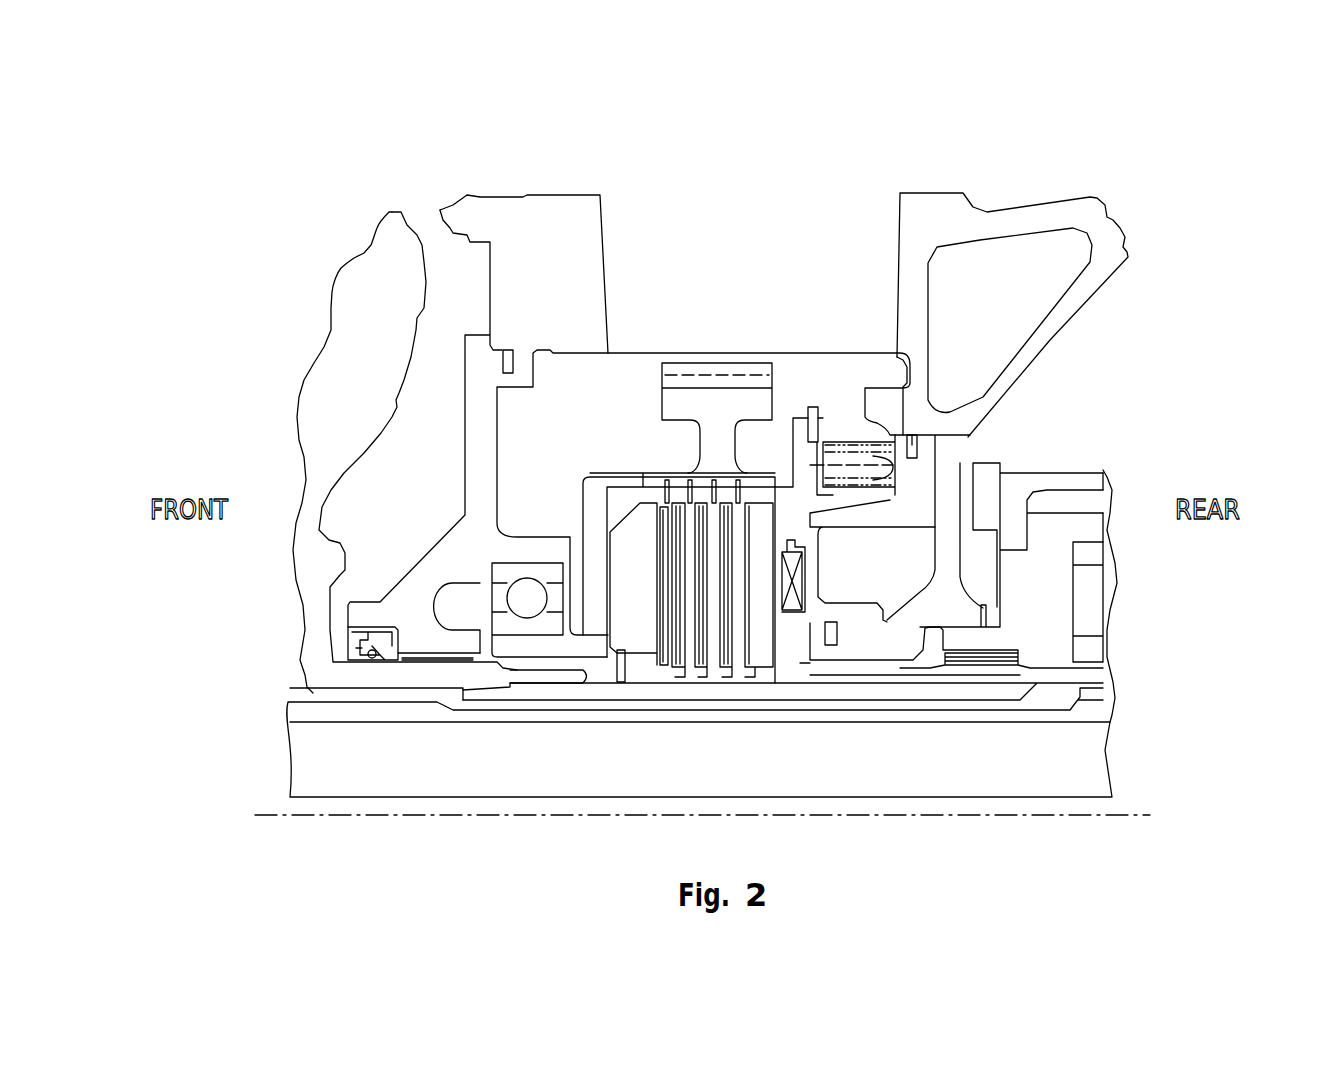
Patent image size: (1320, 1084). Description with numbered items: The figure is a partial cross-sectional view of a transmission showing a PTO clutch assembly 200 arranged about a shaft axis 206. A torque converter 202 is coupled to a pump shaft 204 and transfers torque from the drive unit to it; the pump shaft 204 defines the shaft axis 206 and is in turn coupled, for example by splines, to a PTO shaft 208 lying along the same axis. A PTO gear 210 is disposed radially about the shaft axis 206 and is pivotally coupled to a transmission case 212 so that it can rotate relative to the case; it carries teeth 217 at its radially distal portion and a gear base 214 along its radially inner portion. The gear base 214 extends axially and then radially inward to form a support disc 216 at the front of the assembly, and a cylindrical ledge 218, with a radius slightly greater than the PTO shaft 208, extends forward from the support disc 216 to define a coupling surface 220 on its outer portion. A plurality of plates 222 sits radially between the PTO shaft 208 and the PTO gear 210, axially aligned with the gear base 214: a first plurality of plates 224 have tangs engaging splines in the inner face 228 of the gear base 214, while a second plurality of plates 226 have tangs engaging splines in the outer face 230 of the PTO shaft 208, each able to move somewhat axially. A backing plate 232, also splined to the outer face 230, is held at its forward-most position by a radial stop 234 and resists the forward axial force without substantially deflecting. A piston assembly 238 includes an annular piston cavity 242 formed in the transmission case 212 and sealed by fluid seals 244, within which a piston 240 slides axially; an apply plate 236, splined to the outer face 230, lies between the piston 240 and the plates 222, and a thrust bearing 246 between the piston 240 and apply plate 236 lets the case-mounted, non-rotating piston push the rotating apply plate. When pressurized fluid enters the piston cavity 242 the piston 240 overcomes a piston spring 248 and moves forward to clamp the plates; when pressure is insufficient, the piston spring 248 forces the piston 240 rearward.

The PTO clutch assembly 200 is at (820, 200).
The torque converter 202 is at (331, 380).
The pump shaft 204 is at (367, 677).
The shaft axis 206 is at (583, 817).
The PTO shaft 208 is at (565, 697).
The PTO gear 210 is at (685, 388).
The transmission case 212 is at (478, 427).
The gear base 214 is at (615, 488).
The support disc 216 is at (588, 520).
The teeth 217 is at (727, 358).
The cylindrical ledge 218 is at (517, 645).
The coupling surface 220 is at (503, 630).
The plurality of plates 222 is at (858, 445).
The first plurality of plates 224 is at (738, 487).
The second plurality of plates 226 is at (752, 674).
The inner face 228 is at (787, 500).
The outer face 230 is at (810, 675).
The backing plate 232 is at (637, 625).
The radial stop 234 is at (622, 683).
The apply plate 236 is at (800, 527).
The piston assembly 238 is at (907, 435).
The piston 240 is at (817, 557).
The piston cavity 242 is at (920, 562).
The fluid seals 244 is at (917, 447).
The thrust bearing 246 is at (805, 615).
The piston spring 248 is at (917, 423).